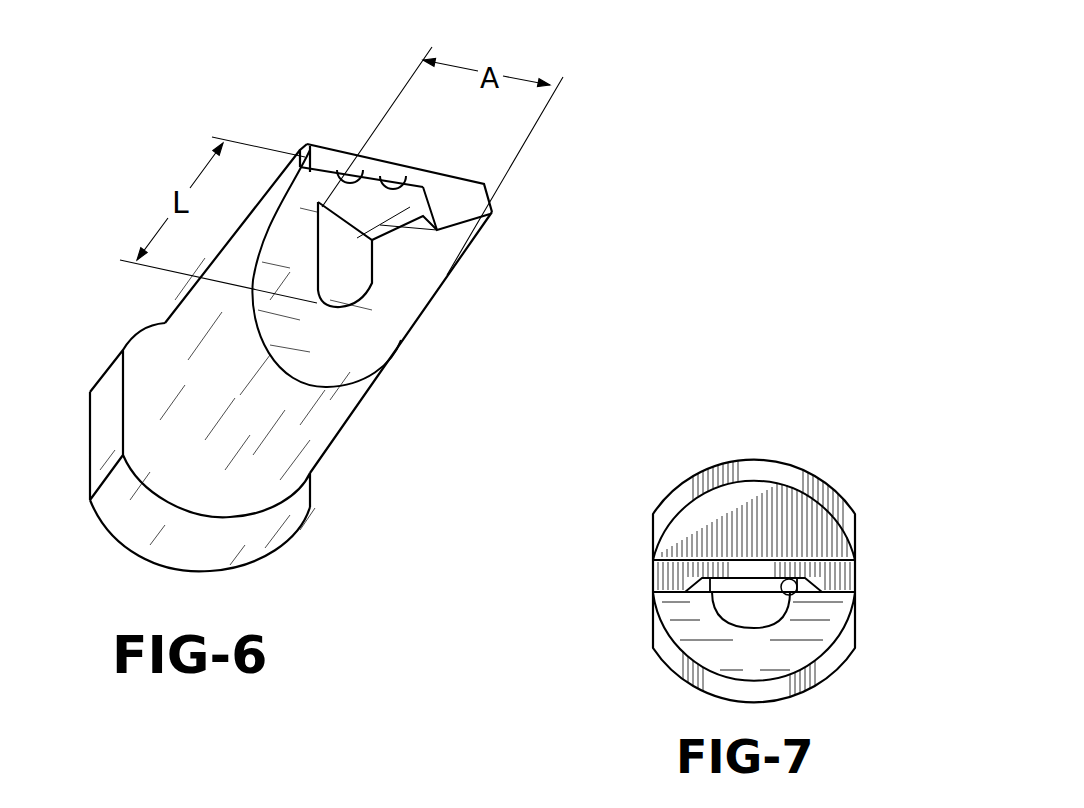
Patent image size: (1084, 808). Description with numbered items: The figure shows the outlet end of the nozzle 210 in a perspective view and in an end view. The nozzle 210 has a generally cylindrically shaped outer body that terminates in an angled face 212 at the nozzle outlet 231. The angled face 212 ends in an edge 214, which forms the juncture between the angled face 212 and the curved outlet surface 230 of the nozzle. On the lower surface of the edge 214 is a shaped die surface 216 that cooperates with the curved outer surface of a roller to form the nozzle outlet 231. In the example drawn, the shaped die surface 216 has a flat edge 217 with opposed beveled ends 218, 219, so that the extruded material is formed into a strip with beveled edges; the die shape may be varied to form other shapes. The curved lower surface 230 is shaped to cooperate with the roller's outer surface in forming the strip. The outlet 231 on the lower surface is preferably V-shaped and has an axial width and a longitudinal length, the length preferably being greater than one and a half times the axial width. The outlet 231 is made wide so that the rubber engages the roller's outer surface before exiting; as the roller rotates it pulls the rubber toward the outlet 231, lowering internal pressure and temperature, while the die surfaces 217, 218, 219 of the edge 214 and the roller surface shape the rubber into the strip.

In FIG. 6, the nozzle 210 is at (127, 207).
In FIG. 7, the nozzle 210 is at (838, 458).
In FIG. 6, the angled face 212 is at (378, 168).
In FIG. 7, the angled face 212 is at (728, 515).
In FIG. 6, the edge 214 is at (478, 198).
In FIG. 6, the shaped die surface 216 is at (432, 187).
In FIG. 7, the shaped die surface 216 is at (800, 598).
In FIG. 6, the flat edge 217 is at (413, 177).
In FIG. 6, the beveled end 218 is at (360, 177).
In FIG. 6, the beveled end 219 is at (447, 210).
In FIG. 6, the curved outlet surface 230 is at (345, 333).
In FIG. 6, the nozzle outlet 231 is at (380, 253).
In FIG. 7, the nozzle outlet 231 is at (757, 588).